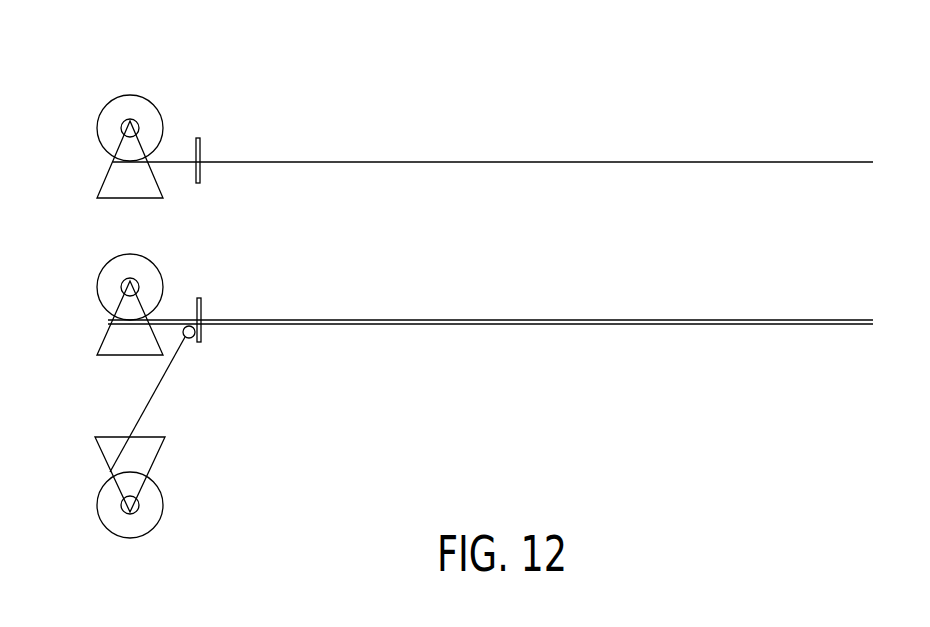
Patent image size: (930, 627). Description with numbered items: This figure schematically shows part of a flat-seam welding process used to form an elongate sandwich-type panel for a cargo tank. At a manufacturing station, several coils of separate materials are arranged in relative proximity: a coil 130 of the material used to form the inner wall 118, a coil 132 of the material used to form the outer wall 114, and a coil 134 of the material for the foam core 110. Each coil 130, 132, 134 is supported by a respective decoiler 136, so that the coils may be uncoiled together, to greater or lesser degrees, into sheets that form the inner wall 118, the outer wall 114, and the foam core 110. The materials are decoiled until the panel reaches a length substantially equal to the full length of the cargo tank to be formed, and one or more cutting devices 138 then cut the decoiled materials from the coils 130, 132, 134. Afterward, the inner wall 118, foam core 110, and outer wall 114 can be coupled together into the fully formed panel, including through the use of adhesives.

The foam core 110 is at (788, 320).
The outer wall 114 is at (382, 162).
The inner wall 118 is at (265, 326).
The coil 130 is at (150, 540).
The coil 132 is at (158, 95).
The coil 134 is at (93, 288).
The decoiler 136 is at (128, 186).
The cutting device 138 is at (203, 150).